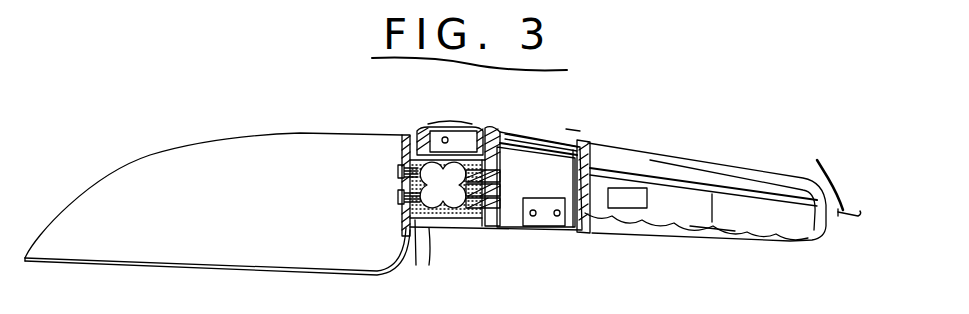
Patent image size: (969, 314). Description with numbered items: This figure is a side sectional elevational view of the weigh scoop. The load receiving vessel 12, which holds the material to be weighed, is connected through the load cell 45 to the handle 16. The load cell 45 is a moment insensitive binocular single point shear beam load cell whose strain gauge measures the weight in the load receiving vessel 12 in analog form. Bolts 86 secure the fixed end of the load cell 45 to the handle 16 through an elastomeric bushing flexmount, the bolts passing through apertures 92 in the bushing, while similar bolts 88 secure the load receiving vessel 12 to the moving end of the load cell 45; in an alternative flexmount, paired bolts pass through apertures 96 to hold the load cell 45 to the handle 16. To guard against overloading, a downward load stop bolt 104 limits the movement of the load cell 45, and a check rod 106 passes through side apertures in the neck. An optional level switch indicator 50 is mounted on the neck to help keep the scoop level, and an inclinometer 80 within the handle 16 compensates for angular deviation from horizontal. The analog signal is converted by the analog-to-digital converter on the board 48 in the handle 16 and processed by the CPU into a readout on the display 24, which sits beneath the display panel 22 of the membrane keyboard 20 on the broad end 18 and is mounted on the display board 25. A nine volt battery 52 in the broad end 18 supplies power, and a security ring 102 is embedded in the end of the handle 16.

The load receiving vessel 12 is at (283, 212).
The handle 16 is at (688, 164).
The broad end 18 is at (587, 141).
The membrane keyboard 20 is at (571, 133).
The display panel 22 is at (538, 132).
The display 24 is at (524, 134).
The display board 25 is at (503, 136).
The load cell 45 is at (441, 214).
The board 48 is at (712, 228).
The level switch indicator 50 is at (443, 124).
The battery 52 is at (543, 225).
The inclinometer 80 is at (627, 198).
The bolts 86 is at (500, 176).
The bolts 88 is at (398, 171).
The apertures 92 is at (501, 189).
The apertures 96 is at (500, 205).
The security ring 102 is at (831, 171).
The downward load stop bolt 104 is at (418, 270).
The check rod 106 is at (402, 153).